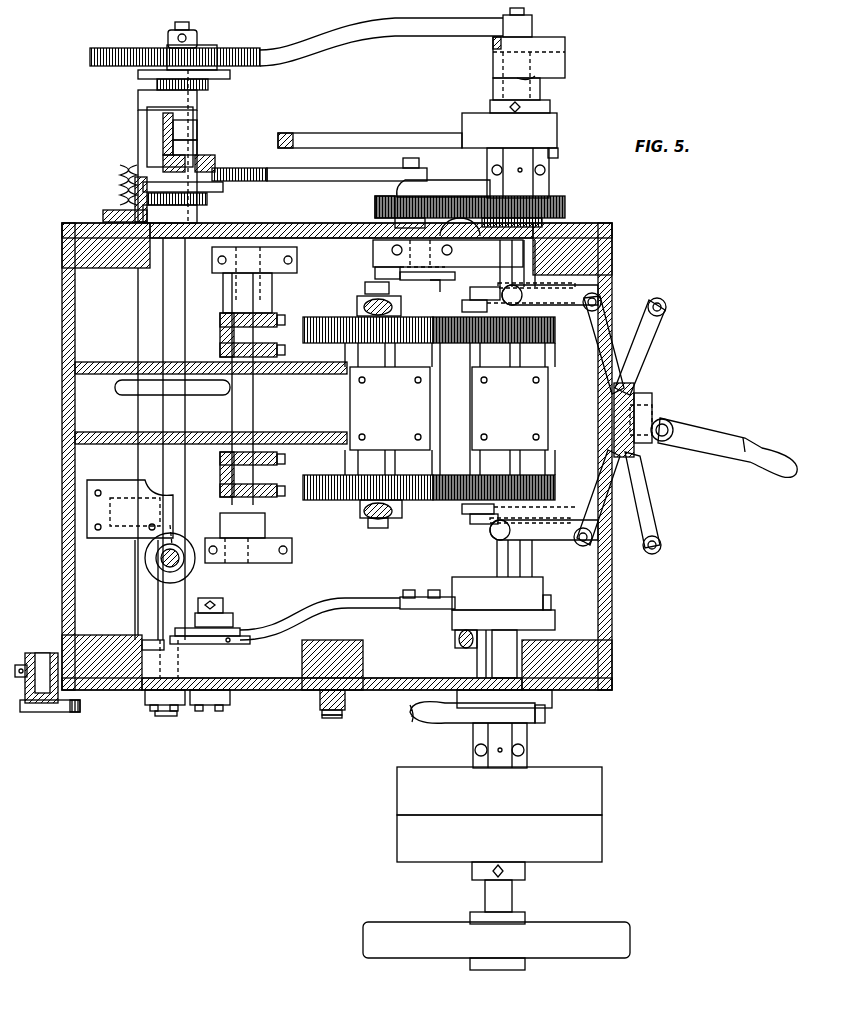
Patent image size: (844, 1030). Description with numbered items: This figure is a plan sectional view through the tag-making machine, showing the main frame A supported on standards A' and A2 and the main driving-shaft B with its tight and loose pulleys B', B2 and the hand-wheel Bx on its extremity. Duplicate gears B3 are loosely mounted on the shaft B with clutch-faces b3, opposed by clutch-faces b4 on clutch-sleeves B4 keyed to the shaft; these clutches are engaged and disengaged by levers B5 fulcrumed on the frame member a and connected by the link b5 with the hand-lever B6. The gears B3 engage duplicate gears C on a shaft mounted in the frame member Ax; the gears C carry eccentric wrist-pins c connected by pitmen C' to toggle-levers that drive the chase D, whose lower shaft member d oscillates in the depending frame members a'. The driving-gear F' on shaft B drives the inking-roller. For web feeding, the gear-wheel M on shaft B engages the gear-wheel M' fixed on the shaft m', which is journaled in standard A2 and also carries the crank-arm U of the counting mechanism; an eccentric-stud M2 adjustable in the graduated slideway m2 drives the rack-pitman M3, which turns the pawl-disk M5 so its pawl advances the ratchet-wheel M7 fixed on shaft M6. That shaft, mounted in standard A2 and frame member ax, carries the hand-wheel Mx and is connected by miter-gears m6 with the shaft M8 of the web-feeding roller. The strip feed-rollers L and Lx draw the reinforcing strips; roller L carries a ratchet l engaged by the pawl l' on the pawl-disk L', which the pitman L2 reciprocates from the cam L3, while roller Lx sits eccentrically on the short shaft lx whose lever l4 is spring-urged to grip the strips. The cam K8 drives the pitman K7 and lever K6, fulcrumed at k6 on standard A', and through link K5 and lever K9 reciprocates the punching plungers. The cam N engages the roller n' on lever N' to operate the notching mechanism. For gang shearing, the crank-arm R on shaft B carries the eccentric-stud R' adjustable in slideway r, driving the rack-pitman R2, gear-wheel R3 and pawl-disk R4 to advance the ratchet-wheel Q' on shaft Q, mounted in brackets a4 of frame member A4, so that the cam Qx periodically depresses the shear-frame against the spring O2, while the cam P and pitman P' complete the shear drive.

The main frame A is at (353, 456).
The standard A2 is at (170, 236).
The standard A' is at (332, 672).
The shaft M6 is at (174, 290).
The hand-wheel Mx is at (115, 387).
The depending frame members a' is at (254, 392).
The lower shaft member d is at (272, 290).
The chase D is at (220, 340).
The gears C is at (368, 407).
The gears B3 is at (556, 335).
The frame member Ax is at (450, 409).
The pitmen C' is at (370, 417).
The eccentric wrist-pins c is at (365, 287).
The crank-arm U is at (424, 295).
The shaft m' is at (417, 280).
The clutch-sleeves B4 is at (490, 548).
The clutch-faces b3 is at (460, 508).
The clutch-faces b4 is at (472, 292).
The levers B5 is at (544, 413).
The frame member a is at (622, 423).
The link b5 is at (620, 422).
The hand-lever B6 is at (762, 452).
The frame member ax is at (130, 509).
The shaft M8 is at (160, 565).
The miter-gears m6 is at (148, 548).
The lever l4 is at (146, 590).
The pawl-disk L' is at (213, 615).
The pitman L2 is at (338, 608).
The pawl l' is at (210, 654).
The ratchet l is at (185, 659).
The short shaft lx is at (153, 659).
The cam L3 is at (475, 593).
The roller n' is at (503, 620).
The cam N is at (453, 632).
The lever N' is at (468, 654).
The main driving-shaft B is at (501, 800).
The lever K9 is at (58, 688).
The link K5 is at (66, 710).
The feed-roller Lx is at (155, 708).
The feed-roller L is at (210, 712).
The lever K6 is at (345, 698).
The fulcrum k6 is at (332, 726).
The cam K8 is at (504, 699).
The pitman K7 is at (433, 722).
The tight pulley B' is at (499, 791).
The loose pulley B2 is at (499, 838).
The hand-wheel Bx is at (496, 940).
The gear-wheel R3 is at (170, 50).
The shaft Q is at (198, 82).
The rack-pitman R2 is at (410, 36).
The eccentric-stud R' is at (533, 22).
The crank-arm R is at (529, 68).
The slideway r is at (493, 48).
The pawl-disk R4 is at (228, 76).
The brackets a4 is at (167, 156).
The ratchet-wheel Q' is at (213, 146).
The frame member A4 is at (147, 128).
The cam Qx is at (197, 128).
The spring O2 is at (120, 190).
The pawl-disk M5 is at (223, 187).
The ratchet-wheel M7 is at (207, 205).
The rack-pitman M3 is at (308, 182).
The pitman P' is at (370, 131).
The cam P is at (510, 149).
The eccentric-stud M2 is at (420, 162).
The slideway m2 is at (442, 190).
The gear-wheel M' is at (371, 201).
The gear-wheel M is at (479, 209).
The driving-gear F' is at (531, 221).